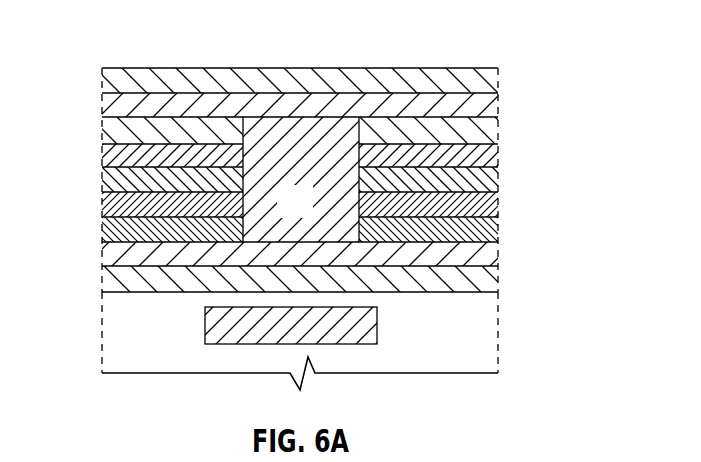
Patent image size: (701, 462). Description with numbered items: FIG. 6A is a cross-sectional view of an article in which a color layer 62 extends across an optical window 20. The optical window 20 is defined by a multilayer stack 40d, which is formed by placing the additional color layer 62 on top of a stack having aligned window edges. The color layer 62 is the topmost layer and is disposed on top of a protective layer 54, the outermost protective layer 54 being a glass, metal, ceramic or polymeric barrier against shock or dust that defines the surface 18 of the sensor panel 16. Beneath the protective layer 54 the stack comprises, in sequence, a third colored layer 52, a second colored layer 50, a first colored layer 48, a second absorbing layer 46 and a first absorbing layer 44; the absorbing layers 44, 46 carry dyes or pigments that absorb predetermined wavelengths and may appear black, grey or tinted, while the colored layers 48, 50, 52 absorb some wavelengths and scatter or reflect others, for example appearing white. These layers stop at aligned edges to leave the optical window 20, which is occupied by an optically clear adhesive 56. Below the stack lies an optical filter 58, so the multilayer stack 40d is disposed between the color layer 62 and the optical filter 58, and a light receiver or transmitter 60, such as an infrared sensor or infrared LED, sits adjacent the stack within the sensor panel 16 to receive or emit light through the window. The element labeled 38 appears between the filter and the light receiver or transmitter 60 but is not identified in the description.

The sensor panel 16 is at (102, 367).
The surface 18 is at (153, 68).
The optical window 20 is at (359, 68).
The dielectric layer 38 is at (112, 323).
The multilayer stack 40d is at (508, 69).
The first absorbing layer 44 is at (107, 238).
The second absorbing layer 46 is at (108, 207).
The first colored layer 48 is at (105, 178).
The second colored layer 50 is at (108, 155).
The third colored layer 52 is at (102, 128).
The protective layer 54 is at (102, 108).
The optically clear adhesive 56 is at (310, 216).
The optical filter 58 is at (105, 280).
The light receiver or transmitter 60 is at (233, 344).
The color layer 62 is at (103, 70).